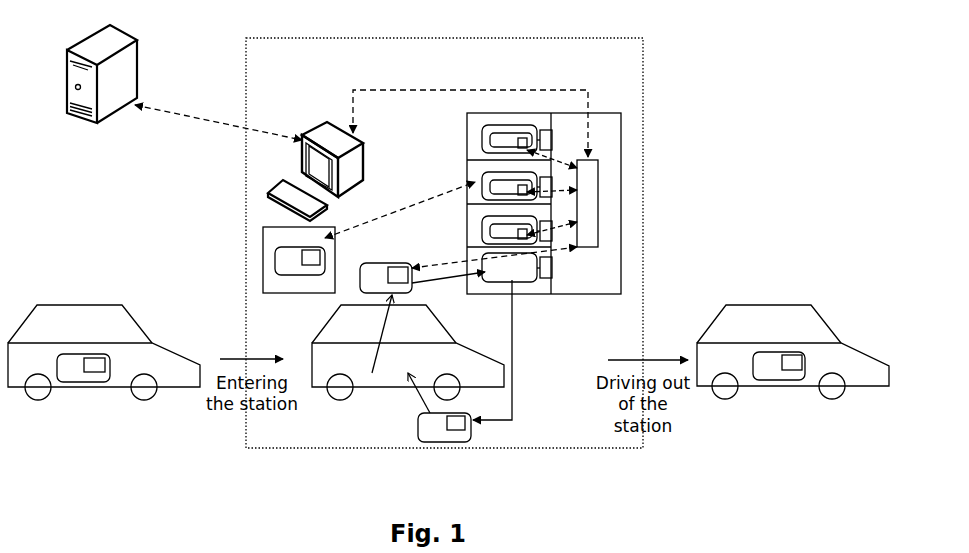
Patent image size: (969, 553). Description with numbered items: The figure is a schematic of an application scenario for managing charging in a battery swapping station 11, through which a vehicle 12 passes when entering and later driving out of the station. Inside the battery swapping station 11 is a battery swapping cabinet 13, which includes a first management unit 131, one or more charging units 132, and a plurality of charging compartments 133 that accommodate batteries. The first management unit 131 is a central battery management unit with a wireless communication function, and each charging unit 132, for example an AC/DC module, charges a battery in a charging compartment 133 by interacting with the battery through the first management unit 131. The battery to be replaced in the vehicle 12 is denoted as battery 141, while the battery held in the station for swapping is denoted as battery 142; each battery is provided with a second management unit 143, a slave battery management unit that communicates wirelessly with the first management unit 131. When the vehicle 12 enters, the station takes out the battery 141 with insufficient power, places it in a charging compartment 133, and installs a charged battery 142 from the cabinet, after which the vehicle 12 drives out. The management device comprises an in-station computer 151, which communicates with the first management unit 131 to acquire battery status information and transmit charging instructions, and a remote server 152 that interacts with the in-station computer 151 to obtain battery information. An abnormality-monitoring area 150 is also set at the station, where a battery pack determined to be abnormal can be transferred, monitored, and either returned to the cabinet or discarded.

The battery swapping station 11 is at (470, 36).
The vehicle 12 is at (122, 305).
The battery swapping cabinet 13 is at (590, 197).
The first management unit 131 is at (598, 185).
The charging unit 132 is at (550, 287).
The charging compartment 133 is at (518, 285).
The battery 141 is at (82, 383).
The battery 142 is at (305, 277).
The second management unit 143 is at (95, 373).
The abnormality-monitoring area 150 is at (263, 262).
The in-station computer 151 is at (363, 160).
The remote server 152 is at (137, 68).